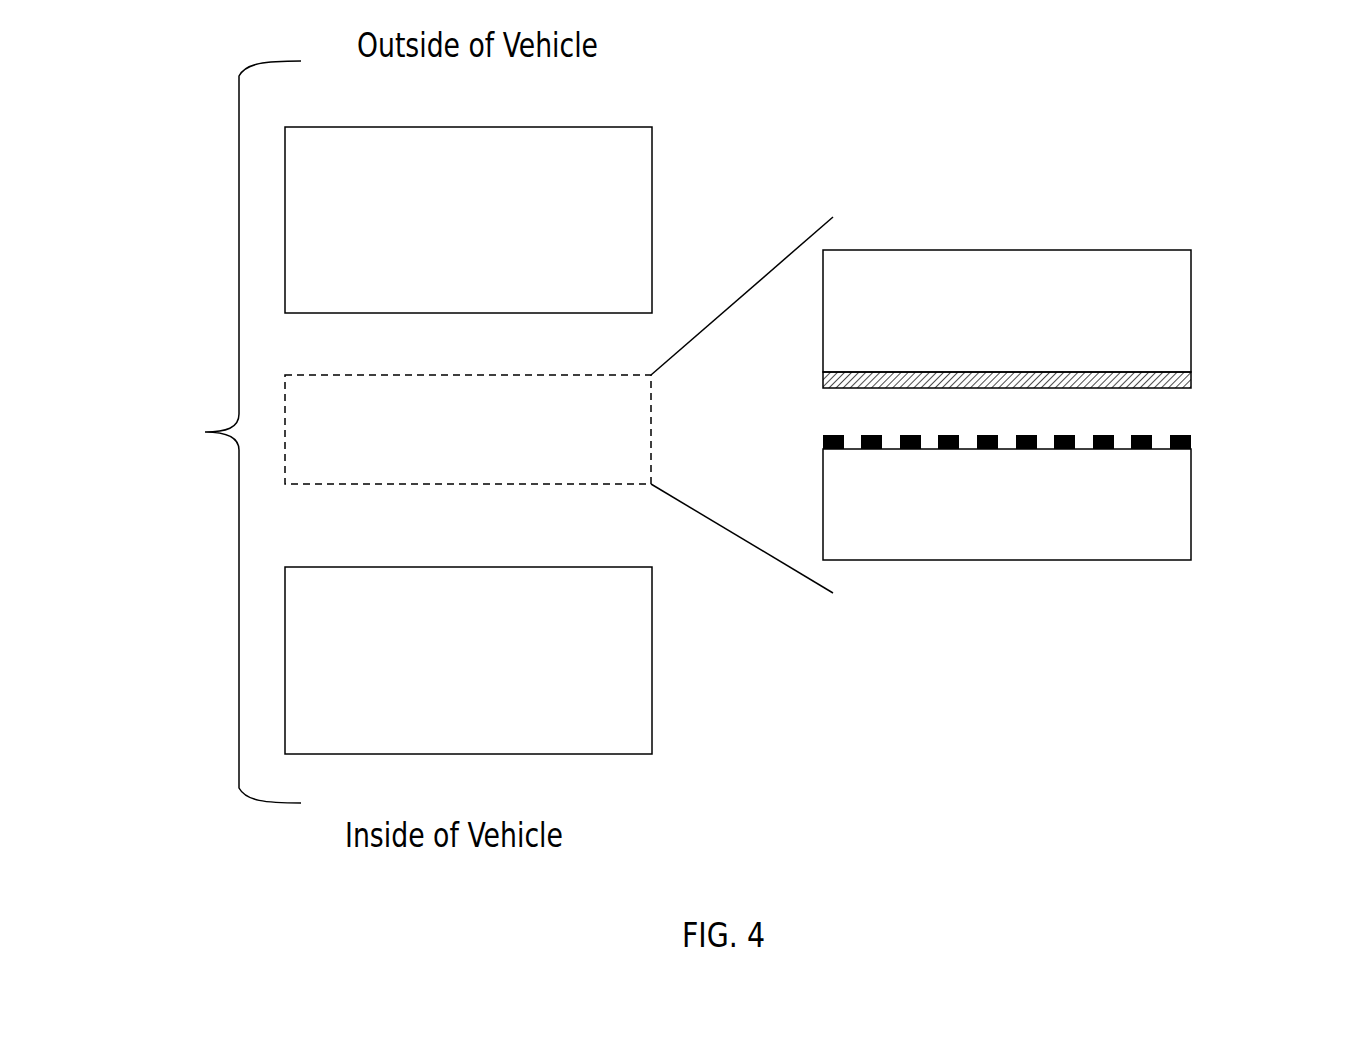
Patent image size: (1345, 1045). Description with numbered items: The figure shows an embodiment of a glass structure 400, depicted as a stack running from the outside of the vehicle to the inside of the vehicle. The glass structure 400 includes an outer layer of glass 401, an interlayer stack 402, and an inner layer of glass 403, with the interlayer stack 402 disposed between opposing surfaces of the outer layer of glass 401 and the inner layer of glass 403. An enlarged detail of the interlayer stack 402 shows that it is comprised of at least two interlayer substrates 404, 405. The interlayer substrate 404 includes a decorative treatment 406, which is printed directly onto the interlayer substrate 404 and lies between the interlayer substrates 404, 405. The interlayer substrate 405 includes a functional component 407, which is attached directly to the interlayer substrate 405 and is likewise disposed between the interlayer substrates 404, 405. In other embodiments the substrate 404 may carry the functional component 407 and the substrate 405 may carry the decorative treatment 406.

The glass structure 400 is at (205, 432).
The outer layer of glass 401 is at (468, 220).
The interlayer stack 402 is at (468, 429).
The inner layer of glass 403 is at (468, 660).
The interlayer substrate 404 is at (1007, 311).
The interlayer substrate 405 is at (1007, 504).
The decorative treatment 406 is at (1032, 383).
The functional component 407 is at (1065, 450).